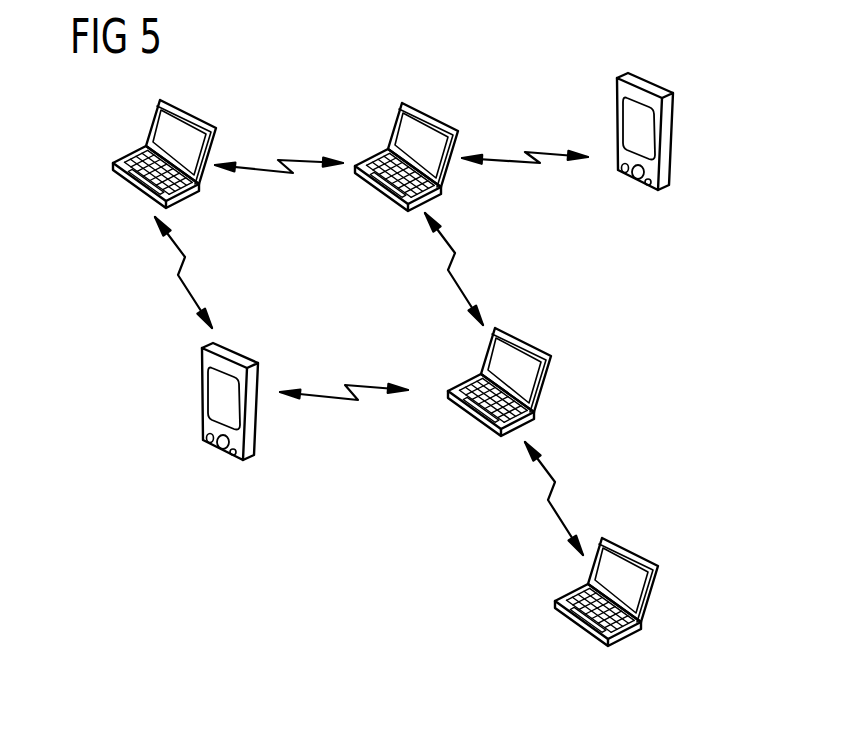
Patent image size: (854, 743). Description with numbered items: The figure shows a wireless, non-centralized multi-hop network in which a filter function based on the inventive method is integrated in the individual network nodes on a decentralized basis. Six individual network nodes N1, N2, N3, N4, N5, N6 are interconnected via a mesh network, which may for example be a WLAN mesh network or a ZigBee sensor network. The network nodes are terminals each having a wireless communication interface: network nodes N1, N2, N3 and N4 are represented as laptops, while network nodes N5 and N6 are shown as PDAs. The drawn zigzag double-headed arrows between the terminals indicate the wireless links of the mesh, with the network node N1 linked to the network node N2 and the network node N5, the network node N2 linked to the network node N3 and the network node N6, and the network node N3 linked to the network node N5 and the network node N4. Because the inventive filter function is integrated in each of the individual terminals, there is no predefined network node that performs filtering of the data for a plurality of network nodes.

The network node N1 is at (132, 186).
The network node N2 is at (372, 190).
The network node N3 is at (467, 417).
The network node N4 is at (574, 630).
The network node N5 is at (202, 392).
The network node N6 is at (617, 122).